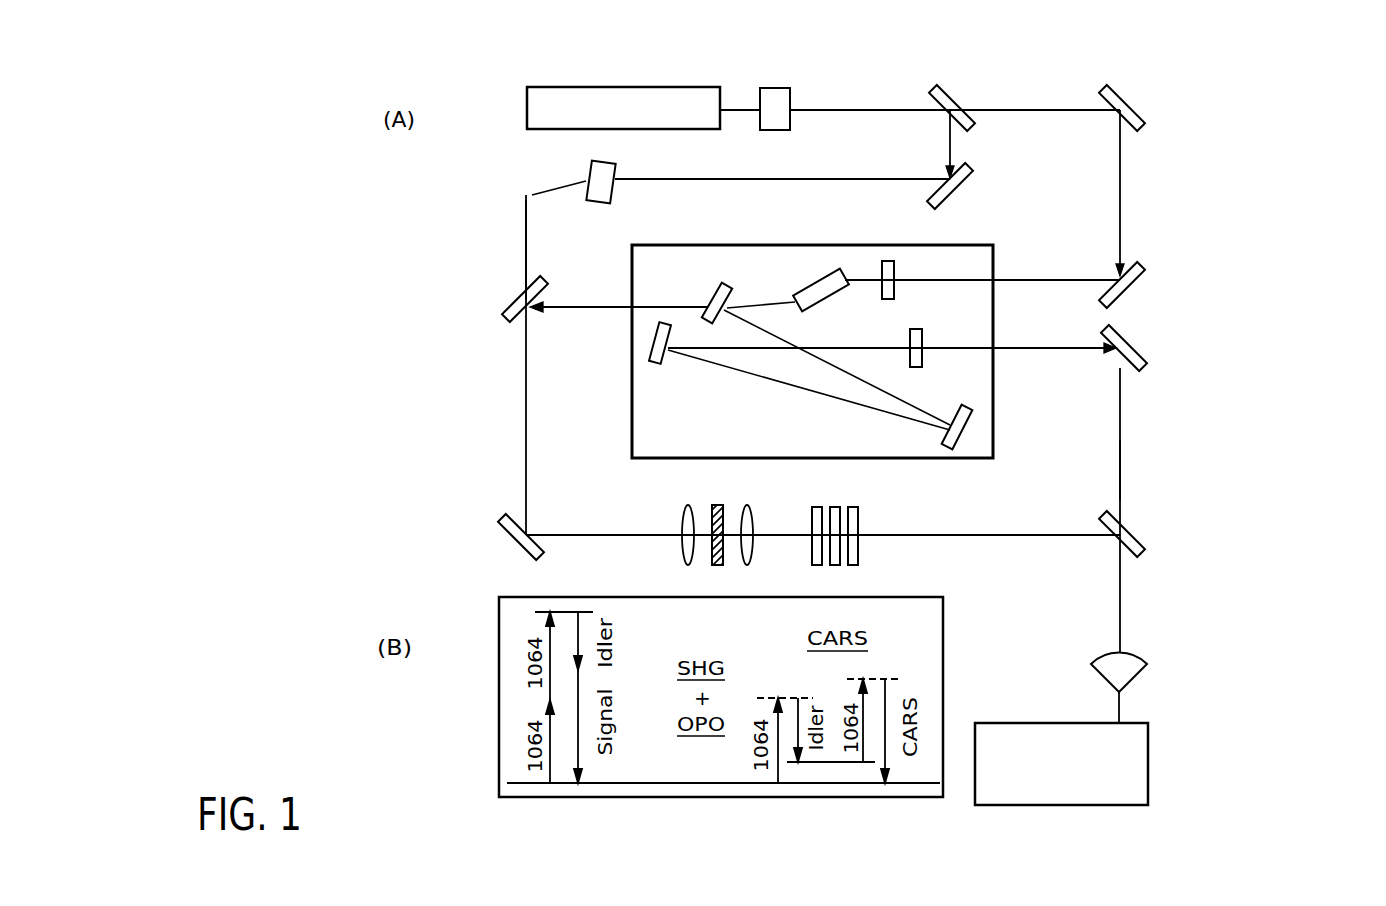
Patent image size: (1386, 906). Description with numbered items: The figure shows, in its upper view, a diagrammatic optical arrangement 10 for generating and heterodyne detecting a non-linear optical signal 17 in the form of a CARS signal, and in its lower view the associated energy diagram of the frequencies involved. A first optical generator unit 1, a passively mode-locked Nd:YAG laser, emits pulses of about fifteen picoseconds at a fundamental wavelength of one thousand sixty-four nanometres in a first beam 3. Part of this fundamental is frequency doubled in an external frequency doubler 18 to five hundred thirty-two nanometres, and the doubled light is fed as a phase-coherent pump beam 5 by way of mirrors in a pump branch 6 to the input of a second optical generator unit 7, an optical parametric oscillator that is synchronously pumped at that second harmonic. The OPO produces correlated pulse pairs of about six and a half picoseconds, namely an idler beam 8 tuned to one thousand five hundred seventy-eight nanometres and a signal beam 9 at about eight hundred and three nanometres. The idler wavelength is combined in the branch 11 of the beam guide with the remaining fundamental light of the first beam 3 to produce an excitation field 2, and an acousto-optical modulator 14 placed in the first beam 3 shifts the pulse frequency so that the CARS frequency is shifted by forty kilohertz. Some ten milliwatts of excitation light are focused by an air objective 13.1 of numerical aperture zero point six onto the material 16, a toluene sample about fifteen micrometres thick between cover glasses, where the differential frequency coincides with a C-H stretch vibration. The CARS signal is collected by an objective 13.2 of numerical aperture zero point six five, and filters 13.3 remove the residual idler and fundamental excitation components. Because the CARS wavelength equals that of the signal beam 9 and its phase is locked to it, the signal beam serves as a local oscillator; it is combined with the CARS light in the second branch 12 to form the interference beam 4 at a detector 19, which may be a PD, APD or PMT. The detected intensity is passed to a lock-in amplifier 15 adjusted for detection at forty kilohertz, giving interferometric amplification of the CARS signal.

The first optical generator unit 1 is at (624, 87).
The excitation field 2 is at (702, 516).
The first beam 3 is at (738, 108).
The interference beam 4 is at (1120, 610).
The pump beam 5 is at (855, 110).
The pump branch 6 is at (1134, 203).
The second optical generator unit 7 is at (797, 245).
The idler beam 8 is at (583, 310).
The signal beam 9 is at (1015, 327).
The optical arrangement 10 is at (1300, 96).
The branch 11 is at (514, 247).
The second branch 12 is at (1134, 469).
The air objective 13.1 is at (686, 507).
The objective 13.2 is at (762, 497).
The filters 13.3 is at (852, 507).
The acousto-optical modulator 14 is at (587, 165).
The lock-in amplifier 15 is at (1148, 770).
The material 16 is at (715, 505).
The non-linear optical signal 17 is at (992, 535).
The frequency doubler 18 is at (775, 88).
The detector 19 is at (1160, 680).